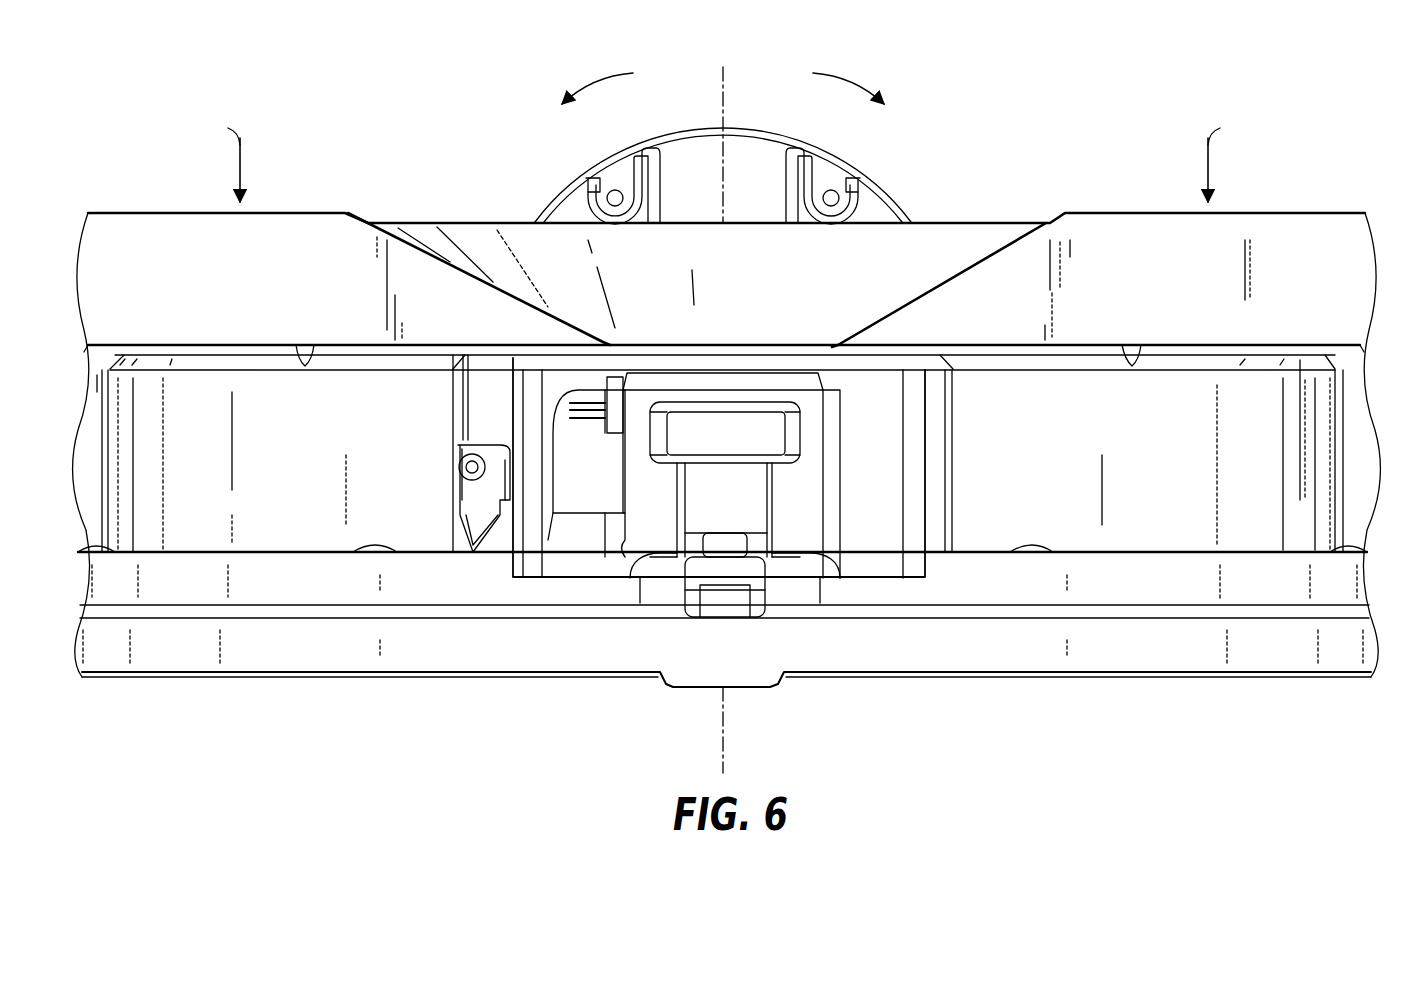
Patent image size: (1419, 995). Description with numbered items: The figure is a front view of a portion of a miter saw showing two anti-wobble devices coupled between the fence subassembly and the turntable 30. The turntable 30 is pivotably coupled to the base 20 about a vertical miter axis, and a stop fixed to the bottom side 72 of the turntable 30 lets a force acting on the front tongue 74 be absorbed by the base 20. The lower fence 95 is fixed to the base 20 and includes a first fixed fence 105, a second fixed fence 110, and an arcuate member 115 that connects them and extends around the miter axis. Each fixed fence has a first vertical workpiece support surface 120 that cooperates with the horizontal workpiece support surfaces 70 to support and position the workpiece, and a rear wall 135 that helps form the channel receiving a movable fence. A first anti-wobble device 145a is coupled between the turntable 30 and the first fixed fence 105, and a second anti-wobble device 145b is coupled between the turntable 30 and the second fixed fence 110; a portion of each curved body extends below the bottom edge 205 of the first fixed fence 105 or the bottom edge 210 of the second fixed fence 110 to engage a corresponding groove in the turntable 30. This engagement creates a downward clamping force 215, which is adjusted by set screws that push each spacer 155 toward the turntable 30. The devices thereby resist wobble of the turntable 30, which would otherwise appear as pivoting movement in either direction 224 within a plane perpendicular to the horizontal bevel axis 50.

The base 20 is at (1300, 583).
The turntable 30 is at (1263, 415).
The horizontal bevel axis 50 is at (720, 500).
The horizontal workpiece support surfaces 70 is at (1270, 355).
The bottom side of the turntable 72 is at (895, 598).
The tongue 74 is at (567, 552).
The lower fence 95 is at (176, 160).
The first fixed fence 105 is at (458, 297).
The second fixed fence 110 is at (988, 297).
The arcuate member 115 is at (918, 258).
The first vertical workpiece support surface 120 is at (372, 290).
The rear wall 135 is at (723, 735).
The first anti-wobble device 145a is at (256, 332).
The second anti-wobble device 145b is at (1190, 332).
The spacer 155 is at (253, 353).
The bottom edge of the first fixed fence 205 is at (305, 363).
The bottom edge of the second fixed fence 210 is at (1132, 345).
The downward clamping force 215 is at (724, 152).
The direction of wobble movement 224 is at (600, 92).